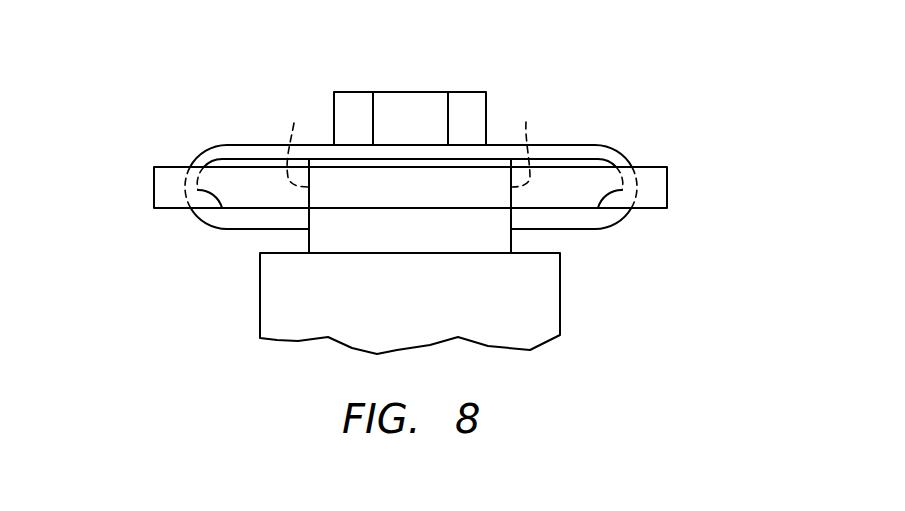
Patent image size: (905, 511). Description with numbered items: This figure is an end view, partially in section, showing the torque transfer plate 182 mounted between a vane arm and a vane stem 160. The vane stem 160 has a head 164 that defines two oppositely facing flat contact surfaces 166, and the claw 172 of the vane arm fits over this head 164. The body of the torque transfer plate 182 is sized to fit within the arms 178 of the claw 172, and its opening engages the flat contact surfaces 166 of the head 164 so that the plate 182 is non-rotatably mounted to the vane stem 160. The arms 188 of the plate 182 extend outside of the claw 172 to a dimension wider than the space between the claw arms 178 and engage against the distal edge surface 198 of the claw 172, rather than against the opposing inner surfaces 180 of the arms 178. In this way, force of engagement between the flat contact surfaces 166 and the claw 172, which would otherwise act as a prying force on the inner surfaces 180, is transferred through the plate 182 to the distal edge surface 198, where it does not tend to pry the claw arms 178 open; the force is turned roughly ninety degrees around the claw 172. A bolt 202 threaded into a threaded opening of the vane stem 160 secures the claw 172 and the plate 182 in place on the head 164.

The vane stem 160 is at (552, 297).
The head 164 is at (272, 191).
The flat contact surfaces 166 is at (408, 139).
The claw 172 is at (253, 136).
The arms 178 is at (198, 152).
The inner surfaces 180 is at (511, 222).
The torque transfer plate 182 is at (659, 136).
The arms 188 is at (154, 187).
The distal edge surface 198 is at (587, 152).
The bolt 202 is at (415, 103).